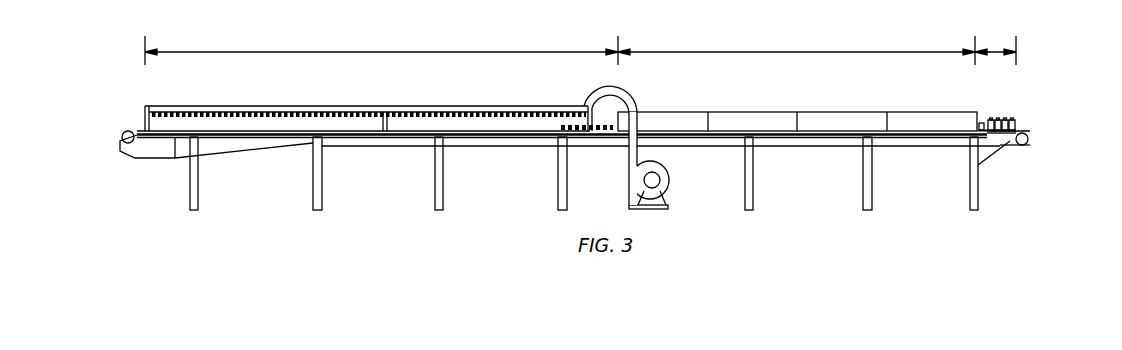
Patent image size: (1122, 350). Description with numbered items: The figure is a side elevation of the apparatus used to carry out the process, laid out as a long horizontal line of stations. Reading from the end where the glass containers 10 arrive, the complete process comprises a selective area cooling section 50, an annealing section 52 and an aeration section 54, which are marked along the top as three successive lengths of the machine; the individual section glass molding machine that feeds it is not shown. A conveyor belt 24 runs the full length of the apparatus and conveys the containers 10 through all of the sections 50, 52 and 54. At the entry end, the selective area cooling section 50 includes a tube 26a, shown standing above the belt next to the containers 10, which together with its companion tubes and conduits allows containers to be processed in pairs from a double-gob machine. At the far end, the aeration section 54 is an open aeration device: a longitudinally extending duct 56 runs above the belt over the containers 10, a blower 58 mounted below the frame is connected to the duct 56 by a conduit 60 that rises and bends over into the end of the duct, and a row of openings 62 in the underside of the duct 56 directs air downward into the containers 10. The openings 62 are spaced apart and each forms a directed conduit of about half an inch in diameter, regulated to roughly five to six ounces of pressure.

The containers 10 is at (1032, 128).
The conveyor belt 24 is at (131, 133).
The tube 26a is at (1003, 118).
The selective area cooling section 50 is at (995, 48).
The annealing section 52 is at (700, 52).
The aeration section 54 is at (484, 52).
The duct 56 is at (441, 108).
The blower 58 is at (669, 177).
The conduit 60 is at (628, 93).
The openings 62 is at (271, 116).